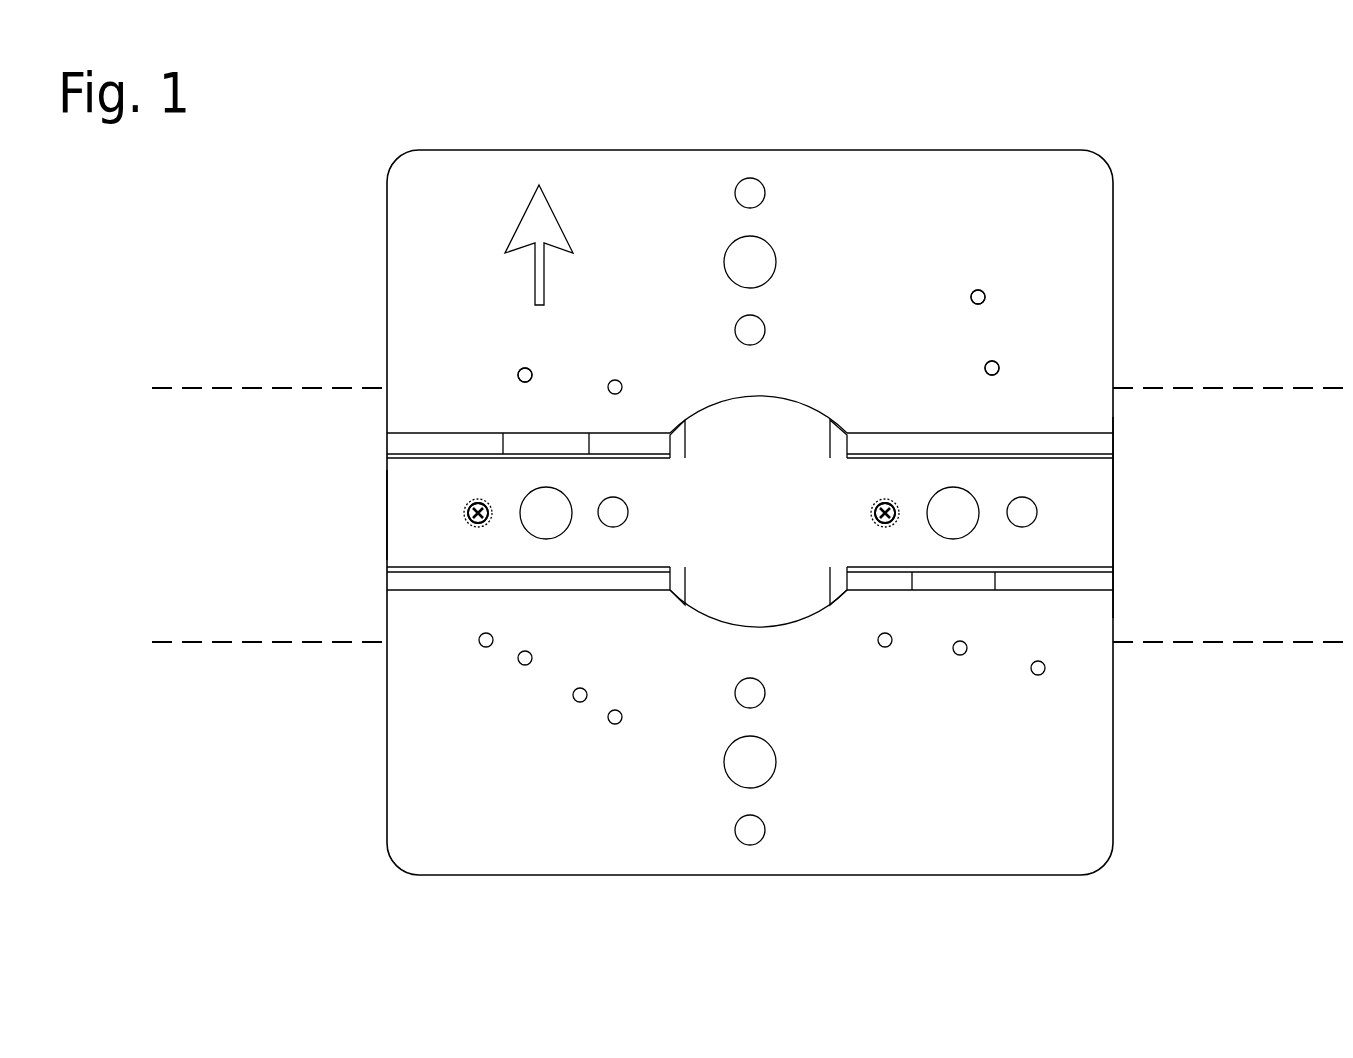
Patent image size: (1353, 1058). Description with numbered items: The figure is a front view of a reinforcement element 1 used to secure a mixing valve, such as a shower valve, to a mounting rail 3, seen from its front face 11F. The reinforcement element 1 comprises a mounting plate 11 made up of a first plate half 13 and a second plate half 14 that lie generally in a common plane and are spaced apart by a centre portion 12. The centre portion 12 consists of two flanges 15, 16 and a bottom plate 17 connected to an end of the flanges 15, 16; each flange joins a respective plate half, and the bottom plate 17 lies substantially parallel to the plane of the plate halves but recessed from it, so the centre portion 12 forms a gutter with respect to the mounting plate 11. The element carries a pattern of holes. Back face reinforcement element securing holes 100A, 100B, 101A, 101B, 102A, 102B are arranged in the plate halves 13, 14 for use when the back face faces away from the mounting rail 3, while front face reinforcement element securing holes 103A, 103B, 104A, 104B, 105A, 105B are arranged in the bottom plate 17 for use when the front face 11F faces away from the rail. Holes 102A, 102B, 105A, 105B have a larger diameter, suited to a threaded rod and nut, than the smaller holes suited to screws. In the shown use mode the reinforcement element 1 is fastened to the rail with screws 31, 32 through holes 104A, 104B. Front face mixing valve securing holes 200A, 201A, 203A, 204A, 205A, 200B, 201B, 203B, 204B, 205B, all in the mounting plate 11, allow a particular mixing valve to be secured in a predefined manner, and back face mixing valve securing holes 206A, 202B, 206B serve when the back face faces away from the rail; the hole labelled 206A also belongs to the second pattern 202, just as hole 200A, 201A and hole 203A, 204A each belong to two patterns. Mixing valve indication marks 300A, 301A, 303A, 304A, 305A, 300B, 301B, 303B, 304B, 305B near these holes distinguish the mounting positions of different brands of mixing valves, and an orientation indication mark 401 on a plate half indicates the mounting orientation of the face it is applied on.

The reinforcement element 1 is at (325, 676).
The mounting rail 3 is at (222, 491).
The mounting plate 11 is at (1100, 417).
The front face 11F is at (1043, 826).
The centre portion 12 is at (374, 510).
The first plate half 13 is at (449, 357).
The second plate half 14 is at (463, 827).
The flange 15 is at (842, 441).
The flange 16 is at (842, 581).
The bottom plate 17 is at (778, 509).
The screw 31 is at (476, 524).
The screw 32 is at (889, 524).
The back face reinforcement element securing hole 100A is at (752, 195).
The back face reinforcement element securing hole 100B is at (750, 692).
The back face reinforcement element securing hole 101A is at (752, 333).
The back face reinforcement element securing hole 101B is at (752, 831).
The back face reinforcement element securing hole 102A is at (753, 265).
The back face reinforcement element securing hole 102B is at (756, 762).
The front face reinforcement element securing hole 103A is at (612, 513).
The front face reinforcement element securing hole 103B is at (1021, 513).
The front face reinforcement element securing hole 104A is at (470, 503).
The front face reinforcement element securing hole 104B is at (882, 503).
The front face reinforcement element securing hole 105A is at (543, 505).
The front face reinforcement element securing hole 105B is at (955, 505).
The front face mixing valve securing hole 200A is at (978, 303).
The front face mixing valve securing hole 201A is at (978, 297).
The second pattern of mixing valve securing holes 202 is at (525, 369).
The back face mixing valve securing hole 206A is at (525, 375).
The front face mixing valve securing hole 203A is at (988, 365).
The front face mixing valve securing hole 204A is at (992, 368).
The front face mixing valve securing hole 205A is at (617, 388).
The front face mixing valve securing hole 200B is at (610, 722).
The front face mixing valve securing hole 201B is at (573, 695).
The back face mixing valve securing hole 202B is at (960, 641).
The front face mixing valve securing hole 203B is at (479, 640).
The front face mixing valve securing hole 204B is at (533, 660).
The front face mixing valve securing hole 205B is at (885, 633).
The back face mixing valve securing hole 206B is at (1040, 675).
The mixing valve indication mark 300A is at (930, 246).
The mixing valve indication mark 301A is at (1025, 246).
The mixing valve indication mark 303A is at (928, 397).
The mixing valve indication mark 304A is at (1042, 393).
The mixing valve indication mark 305A is at (626, 304).
The mixing valve indication mark 300B is at (665, 742).
The mixing valve indication mark 301B is at (648, 676).
The mixing valve indication mark 303B is at (481, 690).
The mixing valve indication mark 304B is at (594, 625).
The mixing valve indication mark 305B is at (918, 728).
The orientation indication mark 401 is at (537, 222).